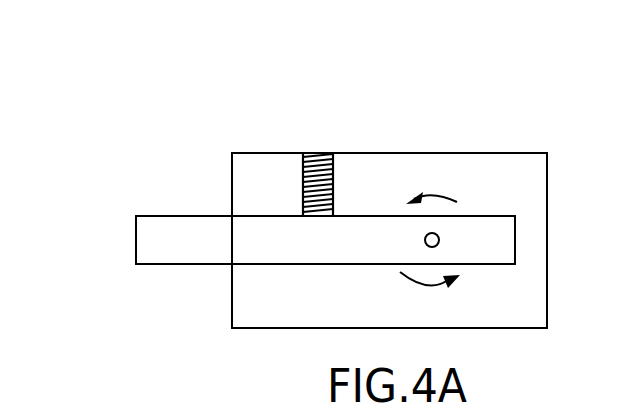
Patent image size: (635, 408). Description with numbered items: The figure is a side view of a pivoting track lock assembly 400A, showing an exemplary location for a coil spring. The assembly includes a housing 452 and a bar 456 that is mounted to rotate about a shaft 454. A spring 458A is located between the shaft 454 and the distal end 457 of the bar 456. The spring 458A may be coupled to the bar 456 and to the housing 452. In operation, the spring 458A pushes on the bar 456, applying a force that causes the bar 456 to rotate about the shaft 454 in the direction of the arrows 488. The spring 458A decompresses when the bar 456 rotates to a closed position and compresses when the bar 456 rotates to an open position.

The pivoting track lock assembly 400A is at (454, 96).
The housing 452 is at (492, 153).
The shaft 454 is at (439, 237).
The bar 456 is at (170, 216).
The distal end 457 is at (136, 248).
The spring 458A is at (335, 177).
The arrows 488 is at (407, 280).